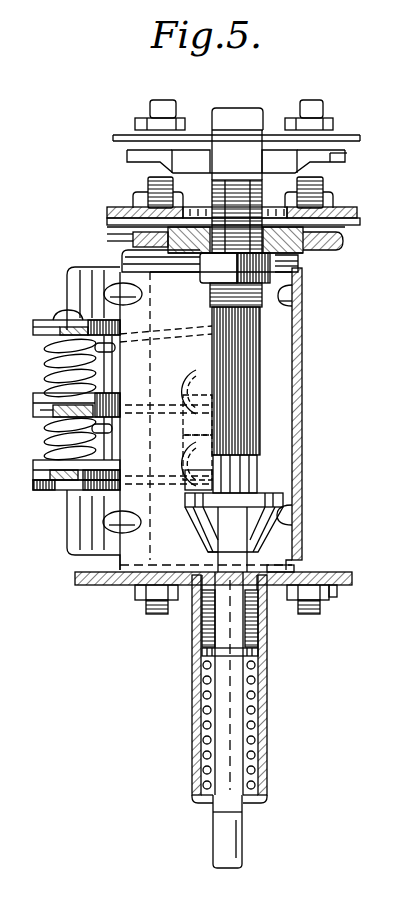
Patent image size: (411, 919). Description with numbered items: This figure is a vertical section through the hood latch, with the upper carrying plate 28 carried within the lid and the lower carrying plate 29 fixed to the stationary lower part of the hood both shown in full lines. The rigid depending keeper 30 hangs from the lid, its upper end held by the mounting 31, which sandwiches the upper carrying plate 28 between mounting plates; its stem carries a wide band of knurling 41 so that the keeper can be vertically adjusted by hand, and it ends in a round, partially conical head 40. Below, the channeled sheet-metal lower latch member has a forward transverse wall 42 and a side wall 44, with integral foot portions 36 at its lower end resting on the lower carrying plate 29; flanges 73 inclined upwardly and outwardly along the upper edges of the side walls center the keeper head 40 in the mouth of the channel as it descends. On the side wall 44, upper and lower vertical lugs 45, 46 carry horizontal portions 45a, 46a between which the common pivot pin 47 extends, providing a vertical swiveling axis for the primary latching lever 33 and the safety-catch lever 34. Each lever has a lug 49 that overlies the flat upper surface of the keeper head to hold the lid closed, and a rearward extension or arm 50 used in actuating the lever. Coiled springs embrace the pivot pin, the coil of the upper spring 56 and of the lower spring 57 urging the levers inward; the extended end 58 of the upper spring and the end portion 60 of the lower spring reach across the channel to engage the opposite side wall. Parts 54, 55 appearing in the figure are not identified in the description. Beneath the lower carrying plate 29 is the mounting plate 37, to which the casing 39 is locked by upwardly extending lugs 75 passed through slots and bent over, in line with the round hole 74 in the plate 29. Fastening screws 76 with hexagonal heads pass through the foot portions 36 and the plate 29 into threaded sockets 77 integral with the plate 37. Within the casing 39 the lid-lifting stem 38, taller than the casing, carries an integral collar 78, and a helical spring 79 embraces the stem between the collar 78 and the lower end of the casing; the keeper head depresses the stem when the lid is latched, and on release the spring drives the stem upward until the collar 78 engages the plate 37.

The upper carrying plate 28 is at (107, 212).
The lower carrying plate 29 is at (90, 584).
The keeper 30 is at (255, 318).
The keeper mounting 31 is at (122, 233).
The primary latching lever 33 is at (112, 478).
The safety-catch lever 34 is at (118, 336).
The foot portions 36 is at (172, 565).
The mounting plate 37 is at (125, 586).
The lid-lifting stem 38 is at (228, 710).
The casing 39 is at (264, 752).
The keeper head 40 is at (262, 525).
The knurling 41 is at (255, 378).
The forward transverse wall 42 is at (300, 438).
The side wall 44 is at (280, 350).
The upper vertical lug 45 is at (67, 278).
The horizontal portion of upper lug 45a is at (52, 320).
The lower vertical lug 46 is at (70, 540).
The horizontal portion of lower lug 46a is at (46, 487).
The pivot pin 47 is at (72, 394).
The lug 49 is at (197, 382).
The rearward extension 50 is at (36, 331).
The lower link 54 is at (198, 466).
The upper link 55 is at (200, 415).
The upper spring coil 56 is at (62, 357).
The lower spring coil 57 is at (60, 430).
The extended end of upper spring 58 is at (148, 352).
The end portion of lower spring 60 is at (110, 430).
The flanges 73 is at (183, 262).
The round hole 74 is at (275, 568).
The casing lugs 75 is at (204, 572).
The fastening screws 76 is at (311, 605).
The threaded sockets 77 is at (318, 600).
The collar 78 is at (215, 653).
The helical spring 79 is at (210, 700).